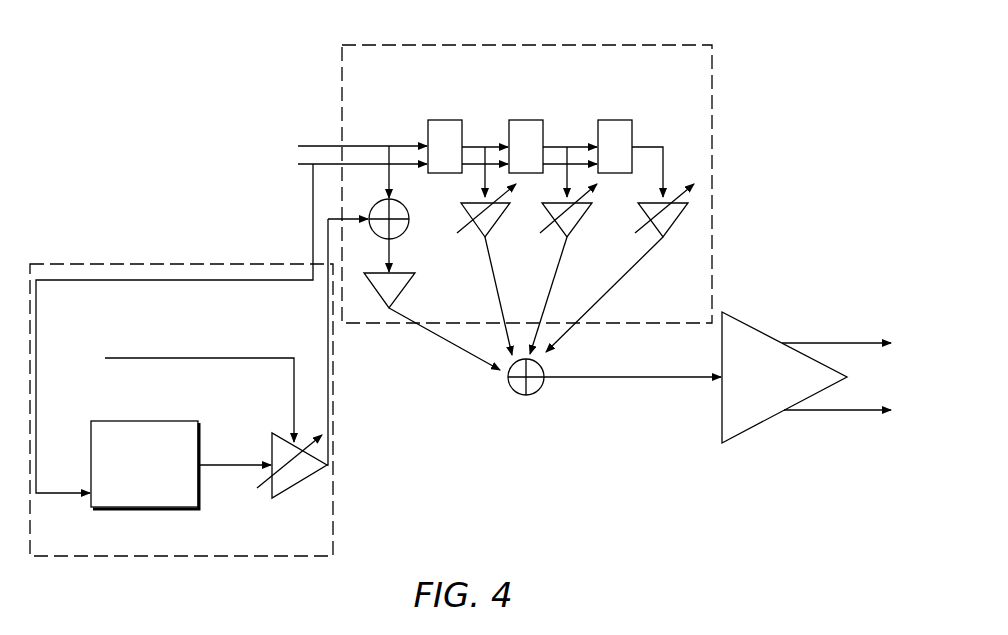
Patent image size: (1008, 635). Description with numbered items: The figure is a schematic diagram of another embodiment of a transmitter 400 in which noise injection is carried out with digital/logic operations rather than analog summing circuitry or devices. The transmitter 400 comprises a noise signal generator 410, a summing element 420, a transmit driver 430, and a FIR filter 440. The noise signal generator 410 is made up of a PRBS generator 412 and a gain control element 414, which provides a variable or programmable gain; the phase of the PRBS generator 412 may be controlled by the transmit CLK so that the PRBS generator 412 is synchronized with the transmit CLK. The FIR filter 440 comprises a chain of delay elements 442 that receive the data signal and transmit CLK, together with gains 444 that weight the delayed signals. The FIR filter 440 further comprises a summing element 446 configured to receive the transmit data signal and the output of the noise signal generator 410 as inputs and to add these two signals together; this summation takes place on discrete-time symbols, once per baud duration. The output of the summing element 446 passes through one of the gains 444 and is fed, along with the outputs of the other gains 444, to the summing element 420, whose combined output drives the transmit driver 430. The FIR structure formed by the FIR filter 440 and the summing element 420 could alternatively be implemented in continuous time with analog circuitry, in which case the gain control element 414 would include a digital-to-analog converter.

The transmitter 400 is at (112, 56).
The noise signal generator 410 is at (333, 512).
The PRBS generator 412 is at (153, 507).
The gain control element 414 is at (272, 443).
The summing element 420 is at (540, 392).
The transmit driver 430 is at (758, 327).
The FIR filter 440 is at (712, 147).
The delay elements 442 is at (445, 120).
The gains 444 is at (500, 222).
The summing element 446 is at (403, 206).